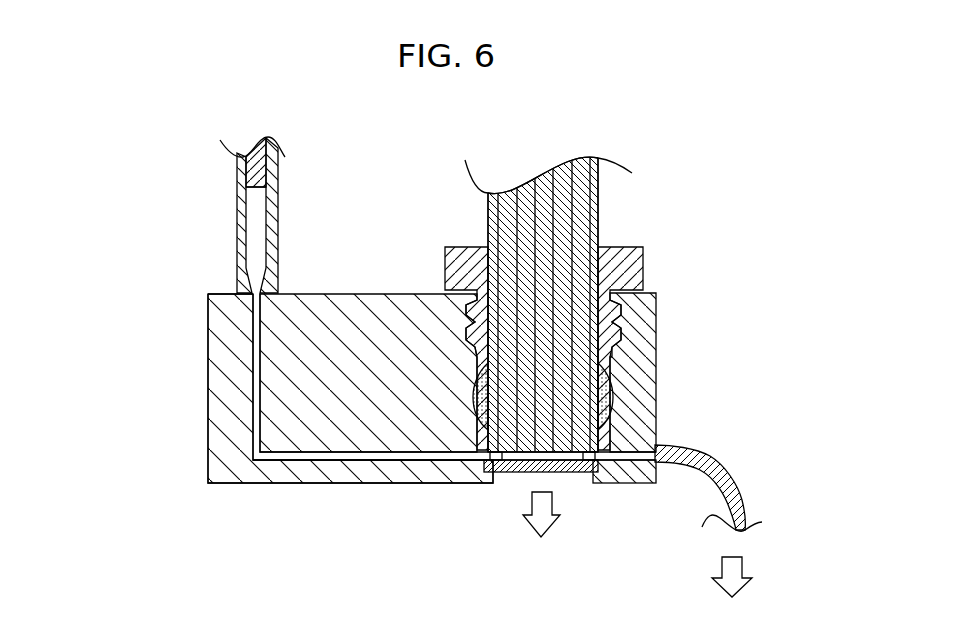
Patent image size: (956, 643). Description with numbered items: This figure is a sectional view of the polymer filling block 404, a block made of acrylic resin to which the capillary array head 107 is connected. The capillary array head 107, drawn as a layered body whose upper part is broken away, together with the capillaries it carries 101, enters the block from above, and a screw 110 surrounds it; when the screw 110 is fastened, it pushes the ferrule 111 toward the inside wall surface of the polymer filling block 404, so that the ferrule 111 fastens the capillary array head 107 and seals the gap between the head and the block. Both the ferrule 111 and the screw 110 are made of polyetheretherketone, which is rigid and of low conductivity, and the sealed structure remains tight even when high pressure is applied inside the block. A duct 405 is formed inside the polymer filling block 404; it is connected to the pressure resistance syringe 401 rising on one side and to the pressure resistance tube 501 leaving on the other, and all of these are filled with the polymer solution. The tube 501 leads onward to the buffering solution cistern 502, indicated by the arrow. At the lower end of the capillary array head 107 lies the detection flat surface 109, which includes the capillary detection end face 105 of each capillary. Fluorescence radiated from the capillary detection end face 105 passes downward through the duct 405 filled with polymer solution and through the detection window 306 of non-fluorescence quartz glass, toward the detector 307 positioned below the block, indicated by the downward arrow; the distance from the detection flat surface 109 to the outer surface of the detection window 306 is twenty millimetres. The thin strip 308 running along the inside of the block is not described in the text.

The multilayer tube / cable 101 is at (514, 299).
The capillary array head 107 is at (488, 193).
The screw 110 is at (632, 268).
The ferrule 111 is at (641, 368).
The pressure resistance syringe 401 is at (240, 222).
The polymer filling block 404 is at (228, 408).
The duct 405 is at (252, 343).
The L-shaped conductive strip 308 is at (466, 462).
The detection window 306 is at (497, 461).
The capillary detection end face 105 is at (503, 471).
The detection flat surface 109 is at (593, 460).
The pressure resistance tube 501 is at (693, 447).
The detector 307 is at (538, 535).
The buffering solution cistern 502 is at (732, 591).